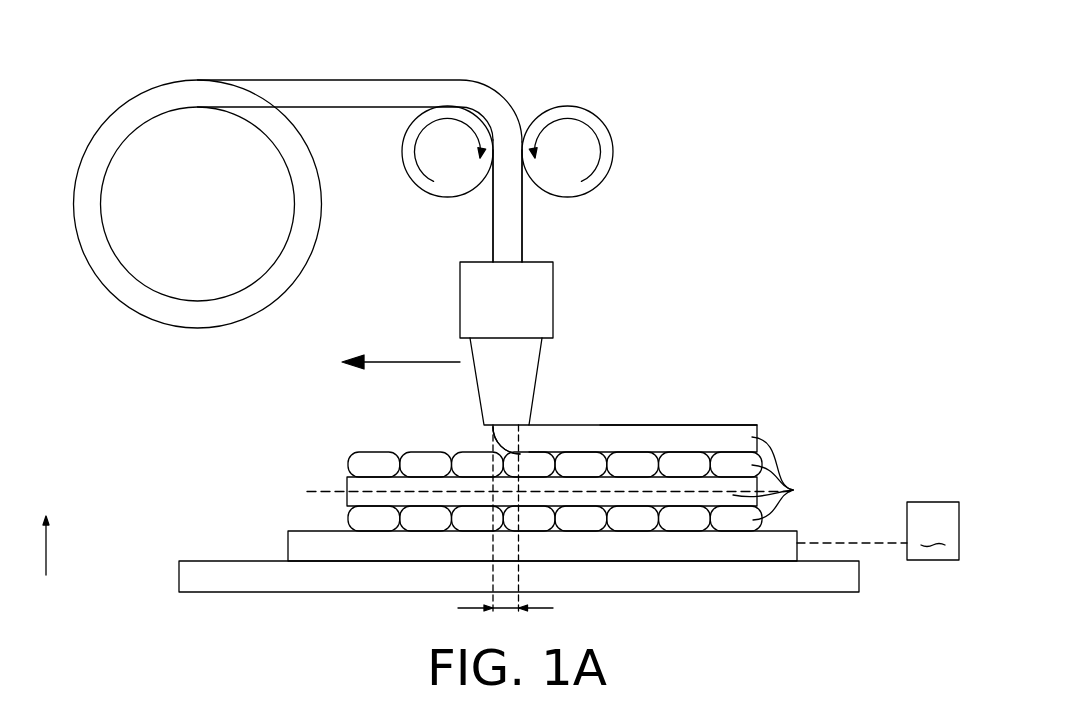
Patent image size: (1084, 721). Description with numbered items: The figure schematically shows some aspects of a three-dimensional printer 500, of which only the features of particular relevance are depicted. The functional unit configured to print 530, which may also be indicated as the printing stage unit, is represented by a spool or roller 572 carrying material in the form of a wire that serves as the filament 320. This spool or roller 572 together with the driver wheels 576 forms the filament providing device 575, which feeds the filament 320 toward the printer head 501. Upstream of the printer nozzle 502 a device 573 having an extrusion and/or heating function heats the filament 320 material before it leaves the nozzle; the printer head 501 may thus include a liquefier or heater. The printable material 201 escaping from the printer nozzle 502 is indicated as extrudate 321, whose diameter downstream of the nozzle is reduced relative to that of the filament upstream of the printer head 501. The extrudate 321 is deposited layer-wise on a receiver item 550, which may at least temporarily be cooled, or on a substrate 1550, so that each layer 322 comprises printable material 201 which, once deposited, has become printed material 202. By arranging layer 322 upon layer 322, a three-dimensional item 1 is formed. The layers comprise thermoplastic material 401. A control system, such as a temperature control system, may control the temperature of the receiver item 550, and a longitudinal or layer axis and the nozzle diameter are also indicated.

The 3D item 1 is at (820, 457).
The 3D printable material 201 is at (506, 440).
The 3D printed material 202 is at (728, 430).
The filament 320 is at (473, 227).
The extrudate 321 is at (510, 407).
The layer 322 is at (788, 478).
The thermoplastic material 401 is at (693, 438).
The 3D printer 500 is at (788, 252).
The printer head 501 is at (540, 307).
The printer nozzle 502 is at (478, 409).
The functional unit configured to 3D print 530 is at (178, 373).
The receiver item 550 is at (268, 548).
The spool or roller 572 is at (132, 80).
The extrusion and/or heating device 573 is at (580, 237).
The filament providing device 575 is at (622, 120).
The driver wheels 576 is at (505, 78).
The substrate 1550 is at (277, 485).